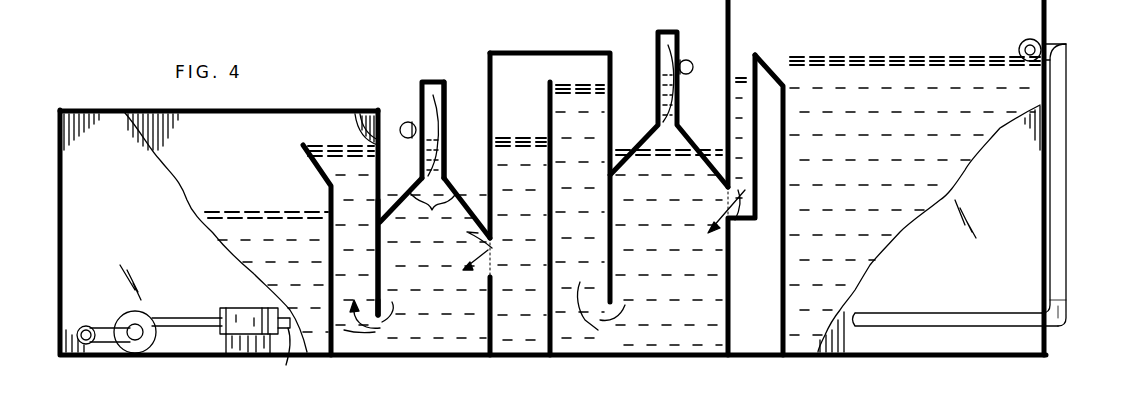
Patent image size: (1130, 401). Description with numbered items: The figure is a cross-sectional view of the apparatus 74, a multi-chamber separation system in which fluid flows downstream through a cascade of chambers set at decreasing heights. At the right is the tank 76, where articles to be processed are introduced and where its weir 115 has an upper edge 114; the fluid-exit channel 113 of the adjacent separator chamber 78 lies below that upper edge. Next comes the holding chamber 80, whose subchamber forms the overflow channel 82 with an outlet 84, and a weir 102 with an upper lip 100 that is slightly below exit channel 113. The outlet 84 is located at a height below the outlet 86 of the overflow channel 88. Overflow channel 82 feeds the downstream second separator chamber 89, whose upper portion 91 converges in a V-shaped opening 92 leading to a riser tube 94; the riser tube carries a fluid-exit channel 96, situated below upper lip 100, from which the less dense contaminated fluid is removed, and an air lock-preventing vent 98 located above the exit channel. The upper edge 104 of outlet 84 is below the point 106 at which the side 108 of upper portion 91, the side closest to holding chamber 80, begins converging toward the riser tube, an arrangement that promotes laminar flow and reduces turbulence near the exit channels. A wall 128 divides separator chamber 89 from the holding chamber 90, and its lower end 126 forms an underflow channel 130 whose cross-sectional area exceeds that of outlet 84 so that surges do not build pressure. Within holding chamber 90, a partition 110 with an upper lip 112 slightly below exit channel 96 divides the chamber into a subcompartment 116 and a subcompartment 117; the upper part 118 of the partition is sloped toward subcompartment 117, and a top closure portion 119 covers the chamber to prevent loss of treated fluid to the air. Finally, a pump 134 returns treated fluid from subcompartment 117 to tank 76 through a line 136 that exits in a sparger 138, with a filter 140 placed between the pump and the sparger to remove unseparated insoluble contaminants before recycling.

The apparatus 74 is at (424, 135).
The tank 76 is at (671, 196).
The separator chamber 78 is at (662, 98).
The holding chamber 80 is at (540, 185).
The overflow channel 82 is at (512, 117).
The outlet 84 is at (492, 270).
The outlet 86 is at (738, 215).
The overflow channel 88 is at (734, 138).
The separator chamber 89 is at (417, 104).
The holding chamber 90 is at (170, 108).
The upper portion 91 is at (410, 192).
The V-shaped opening 92 is at (432, 210).
The riser tube 94 is at (447, 108).
The fluid-exit channel 96 is at (400, 124).
The air lock-preventing vent 98 is at (429, 80).
The upper lip 100 is at (520, 134).
The weir 102 is at (552, 215).
The upper edge 104 is at (490, 252).
The point 106 is at (476, 256).
The side 108 is at (462, 190).
The partition 110 is at (338, 250).
The upper lip 112 is at (287, 197).
The fluid-exit channel 113 is at (700, 41).
The upper edge 114 is at (742, 78).
The weir 115 is at (790, 205).
The subcompartment 116 is at (366, 276).
The subcompartment 117 is at (228, 182).
The upper part 118 is at (325, 162).
The top closure portion 119 is at (258, 112).
The lower end 126 is at (402, 302).
The wall 128 is at (360, 114).
The underflow channel 130 is at (380, 327).
The pump 134 is at (135, 314).
The line 136 is at (1003, 312).
The sparger 138 is at (1020, 45).
The filter 140 is at (240, 310).